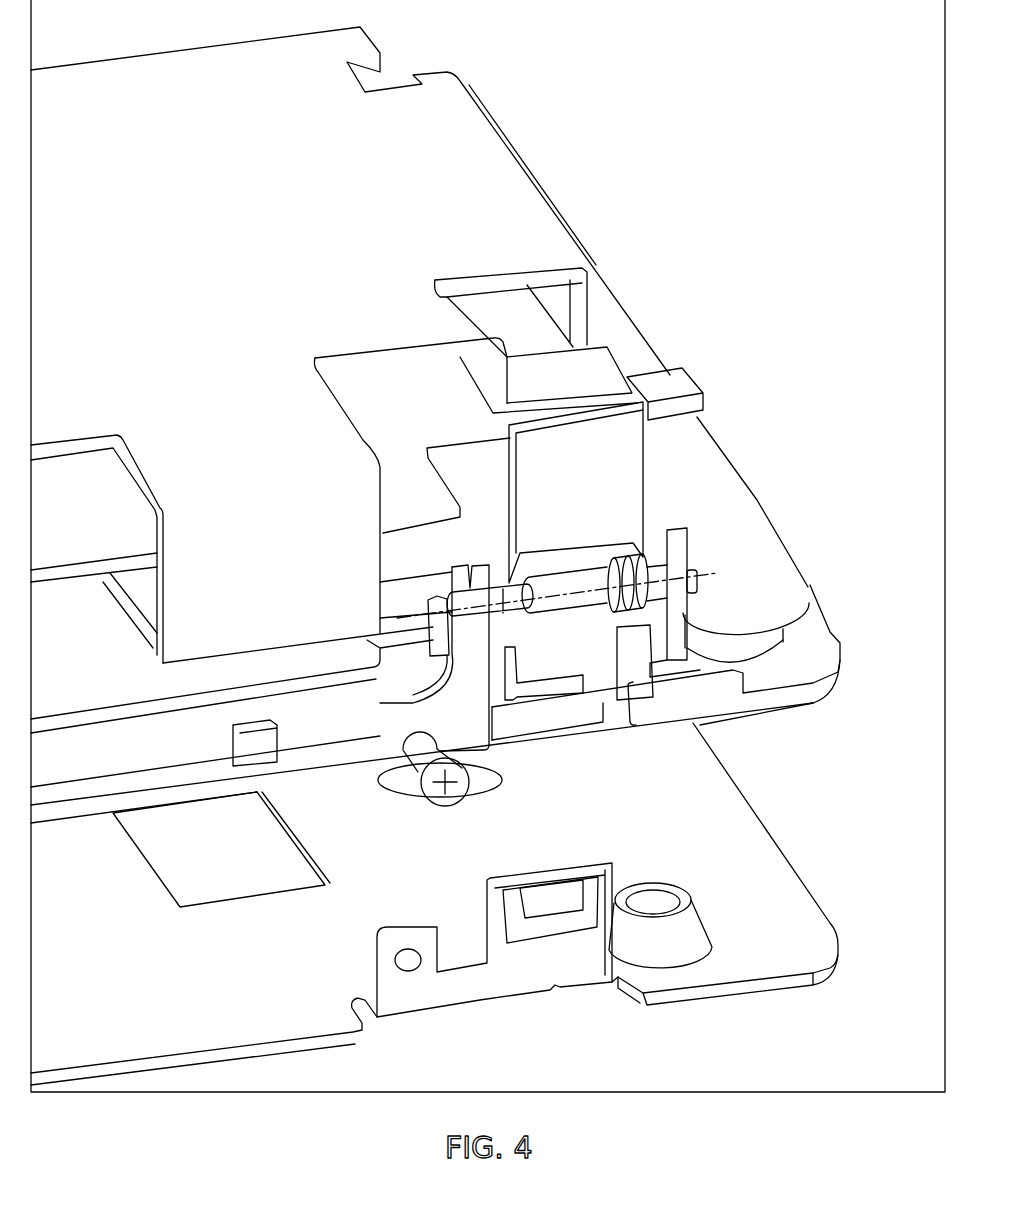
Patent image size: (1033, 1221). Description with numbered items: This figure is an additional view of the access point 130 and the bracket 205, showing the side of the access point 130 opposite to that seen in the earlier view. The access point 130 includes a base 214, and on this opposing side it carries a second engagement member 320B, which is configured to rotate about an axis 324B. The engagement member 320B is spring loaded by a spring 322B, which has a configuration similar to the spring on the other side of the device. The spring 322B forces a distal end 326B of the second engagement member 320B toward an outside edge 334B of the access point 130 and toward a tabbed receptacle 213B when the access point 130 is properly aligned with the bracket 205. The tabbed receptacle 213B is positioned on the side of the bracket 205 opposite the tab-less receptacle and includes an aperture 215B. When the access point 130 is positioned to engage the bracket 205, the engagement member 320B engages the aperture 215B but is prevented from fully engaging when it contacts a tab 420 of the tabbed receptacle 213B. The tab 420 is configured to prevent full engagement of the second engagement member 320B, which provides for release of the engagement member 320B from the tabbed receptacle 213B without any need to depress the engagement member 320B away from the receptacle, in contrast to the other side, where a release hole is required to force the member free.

The access point 130 is at (181, 60).
The base 214 is at (838, 650).
The outside edge 334B is at (728, 722).
The axis 324B is at (410, 610).
The spring 322B is at (630, 563).
The second engagement member 320B is at (592, 670).
The distal end 326B is at (537, 690).
The bracket 205 is at (793, 868).
The tabbed receptacle 213B is at (517, 975).
The tab 420 is at (555, 898).
The aperture 215B is at (553, 925).